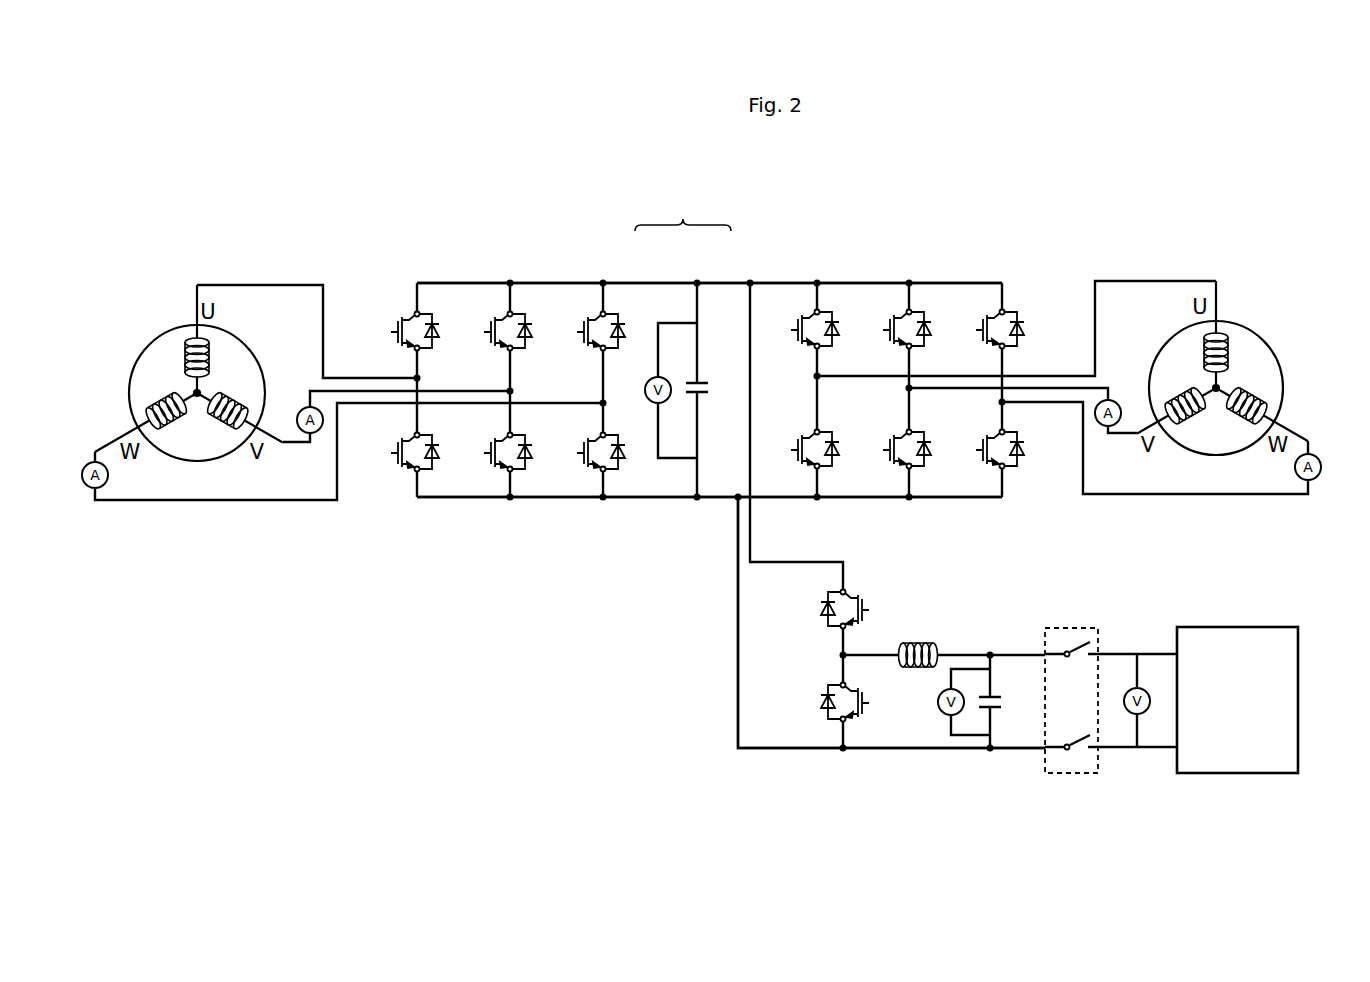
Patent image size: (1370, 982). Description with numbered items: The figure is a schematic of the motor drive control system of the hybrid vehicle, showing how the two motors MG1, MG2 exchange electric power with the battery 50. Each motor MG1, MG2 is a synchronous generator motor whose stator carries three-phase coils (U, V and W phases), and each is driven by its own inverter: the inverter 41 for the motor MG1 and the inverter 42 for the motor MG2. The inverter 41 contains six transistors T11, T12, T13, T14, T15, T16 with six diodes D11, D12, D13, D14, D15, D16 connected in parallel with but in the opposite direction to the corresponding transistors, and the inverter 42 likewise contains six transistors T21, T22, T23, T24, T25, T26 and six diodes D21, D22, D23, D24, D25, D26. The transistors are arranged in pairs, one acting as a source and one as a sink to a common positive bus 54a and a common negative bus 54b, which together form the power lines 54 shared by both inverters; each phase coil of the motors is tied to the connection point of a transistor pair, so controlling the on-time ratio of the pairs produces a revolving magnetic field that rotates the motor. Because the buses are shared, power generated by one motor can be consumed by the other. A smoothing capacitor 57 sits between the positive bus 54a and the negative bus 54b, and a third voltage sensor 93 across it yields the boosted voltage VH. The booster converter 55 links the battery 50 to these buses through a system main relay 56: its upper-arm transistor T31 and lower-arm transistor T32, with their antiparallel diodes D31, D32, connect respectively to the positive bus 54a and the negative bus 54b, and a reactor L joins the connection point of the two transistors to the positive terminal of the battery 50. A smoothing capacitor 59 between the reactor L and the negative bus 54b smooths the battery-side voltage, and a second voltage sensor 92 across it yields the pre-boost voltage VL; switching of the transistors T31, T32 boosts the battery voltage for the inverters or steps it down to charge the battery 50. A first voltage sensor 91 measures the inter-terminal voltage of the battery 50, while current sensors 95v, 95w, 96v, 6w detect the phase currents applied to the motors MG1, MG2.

The motor MG1 is at (1250, 332).
The motor MG2 is at (161, 340).
The inverter 41 is at (1018, 292).
The inverter 42 is at (395, 290).
The battery 50 is at (1242, 626).
The power lines 54 is at (683, 212).
The positive bus 54a is at (636, 282).
The negative bus 54b is at (738, 496).
The booster converter 55 is at (731, 750).
The system main relay 56 is at (1068, 627).
The smoothing capacitor 57 is at (694, 402).
The smoothing capacitor 59 is at (998, 700).
The first voltage sensor 91 is at (1139, 650).
The second voltage sensor 92 is at (946, 716).
The third voltage sensor 93 is at (646, 382).
The current sensor 95v is at (1114, 401).
The current sensor 95w is at (1316, 455).
The current sensor 96v is at (304, 409).
The W-phase current sensor of MG2 6w is at (93, 462).
The reactor L is at (920, 672).
The transistor T11 is at (791, 330).
The transistor T12 is at (883, 330).
The transistor T13 is at (976, 330).
The transistor T14 is at (791, 450).
The transistor T15 is at (883, 450).
The transistor T16 is at (976, 450).
The diode D11 is at (839, 324).
The diode D12 is at (931, 324).
The diode D13 is at (1023, 330).
The diode D14 is at (839, 444).
The diode D15 is at (931, 444).
The diode D16 is at (1023, 450).
The transistor T21 is at (577, 332).
The transistor T22 is at (484, 332).
The transistor T23 is at (391, 332).
The transistor T24 is at (577, 453).
The transistor T25 is at (484, 453).
The transistor T26 is at (391, 453).
The diode D21 is at (625, 326).
The diode D22 is at (532, 326).
The diode D23 is at (439, 326).
The diode D24 is at (626, 455).
The diode D25 is at (532, 448).
The diode D26 is at (439, 448).
The transistor T31 is at (869, 610).
The transistor T32 is at (869, 703).
The diode D31 is at (824, 604).
The diode D32 is at (824, 698).